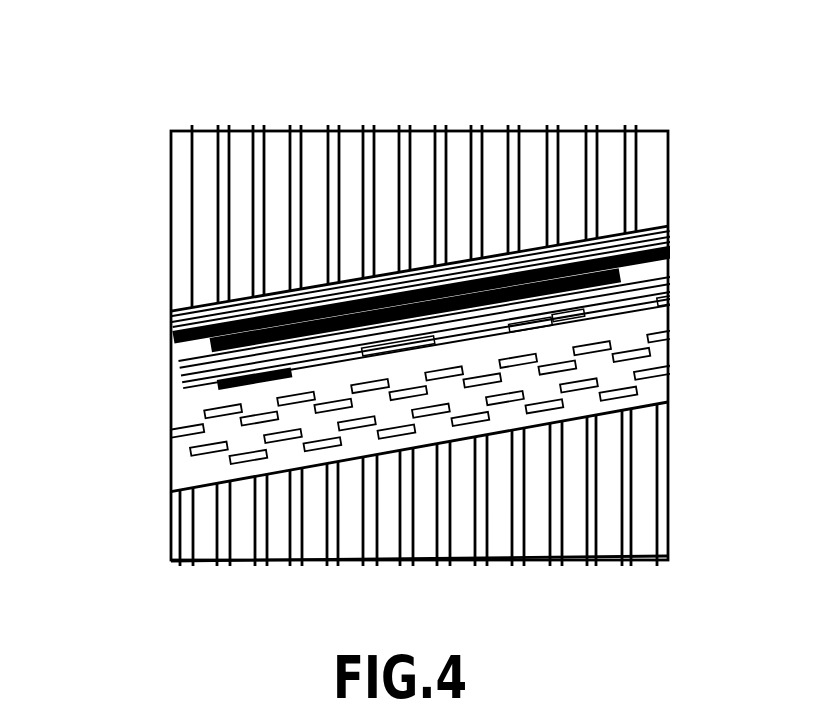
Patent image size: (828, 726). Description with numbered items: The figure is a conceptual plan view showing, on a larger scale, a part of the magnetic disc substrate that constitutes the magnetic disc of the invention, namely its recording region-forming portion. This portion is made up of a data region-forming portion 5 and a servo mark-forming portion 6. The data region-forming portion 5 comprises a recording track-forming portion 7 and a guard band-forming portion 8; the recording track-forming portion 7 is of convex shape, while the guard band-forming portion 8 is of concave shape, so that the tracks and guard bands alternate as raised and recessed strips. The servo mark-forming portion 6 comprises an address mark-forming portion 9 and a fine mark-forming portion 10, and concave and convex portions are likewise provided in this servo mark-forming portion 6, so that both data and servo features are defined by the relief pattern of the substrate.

The data region-forming portion 5 is at (457, 309).
The servo mark-forming portion 6 is at (405, 348).
The recording track-forming portion 7 is at (419, 196).
The guard band-forming portion 8 is at (556, 138).
The address mark-forming portion 9 is at (429, 320).
The fine mark-forming portion 10 is at (437, 399).